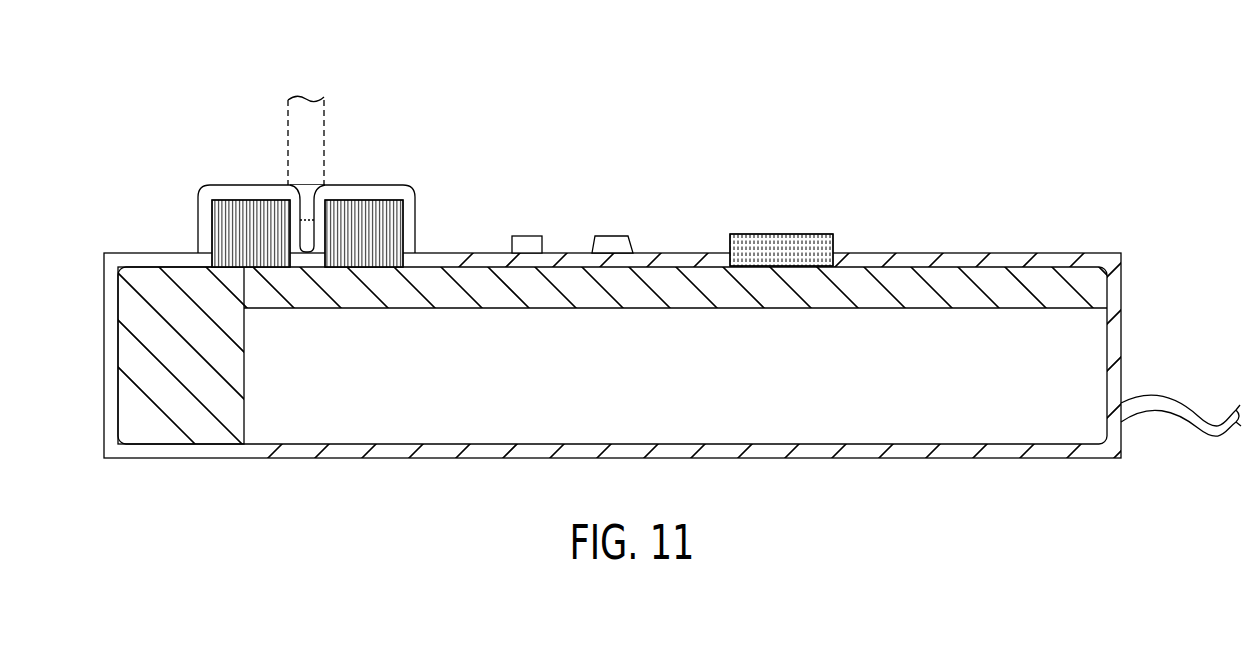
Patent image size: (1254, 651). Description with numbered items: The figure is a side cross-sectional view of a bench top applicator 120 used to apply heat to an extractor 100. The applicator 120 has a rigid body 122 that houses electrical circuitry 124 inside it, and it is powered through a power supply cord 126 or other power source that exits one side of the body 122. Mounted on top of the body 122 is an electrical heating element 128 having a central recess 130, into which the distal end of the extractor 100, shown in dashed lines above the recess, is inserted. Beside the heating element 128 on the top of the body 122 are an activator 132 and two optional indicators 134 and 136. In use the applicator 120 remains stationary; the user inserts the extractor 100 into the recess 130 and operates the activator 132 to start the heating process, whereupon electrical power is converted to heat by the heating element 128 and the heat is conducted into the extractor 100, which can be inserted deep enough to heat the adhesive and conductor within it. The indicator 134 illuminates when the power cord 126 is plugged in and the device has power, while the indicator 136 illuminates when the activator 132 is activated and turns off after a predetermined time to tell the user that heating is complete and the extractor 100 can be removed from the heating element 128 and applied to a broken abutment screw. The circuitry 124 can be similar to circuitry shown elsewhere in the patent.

The extractor 100 is at (324, 110).
The applicator 120 is at (627, 300).
The rigid body 122 is at (110, 342).
The electrical circuitry 124 is at (240, 444).
The power supply cord 126 is at (1207, 437).
The electrical heating element 128 is at (233, 212).
The central recess 130 is at (305, 203).
The activator 132 is at (780, 234).
The indicator 134 is at (615, 236).
The indicator 136 is at (530, 236).